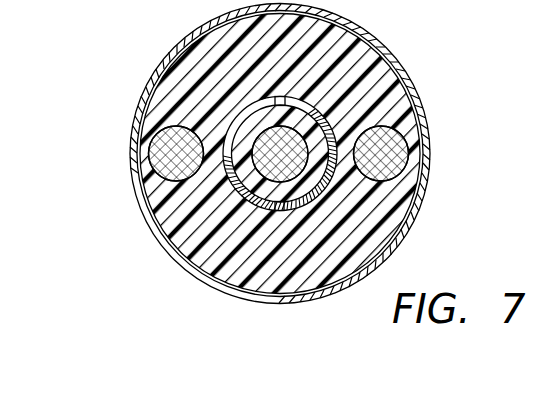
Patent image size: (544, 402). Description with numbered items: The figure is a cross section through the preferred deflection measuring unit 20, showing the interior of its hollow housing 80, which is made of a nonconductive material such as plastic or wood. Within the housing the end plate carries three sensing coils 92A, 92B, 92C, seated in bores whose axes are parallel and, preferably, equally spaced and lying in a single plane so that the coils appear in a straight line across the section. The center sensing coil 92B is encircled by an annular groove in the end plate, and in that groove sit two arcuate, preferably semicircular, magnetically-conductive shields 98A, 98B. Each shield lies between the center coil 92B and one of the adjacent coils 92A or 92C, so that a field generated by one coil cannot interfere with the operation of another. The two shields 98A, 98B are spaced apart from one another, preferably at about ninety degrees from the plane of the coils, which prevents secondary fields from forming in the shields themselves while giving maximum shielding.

The deflection measuring unit 20 is at (442, 180).
The hollow housing 80 is at (430, 137).
The sensing coil 92A is at (168, 156).
The sensing coil 92B is at (285, 156).
The sensing coil 92C is at (408, 148).
The magnetically-conductive shield 98A is at (240, 118).
The magnetically-conductive shield 98B is at (342, 125).